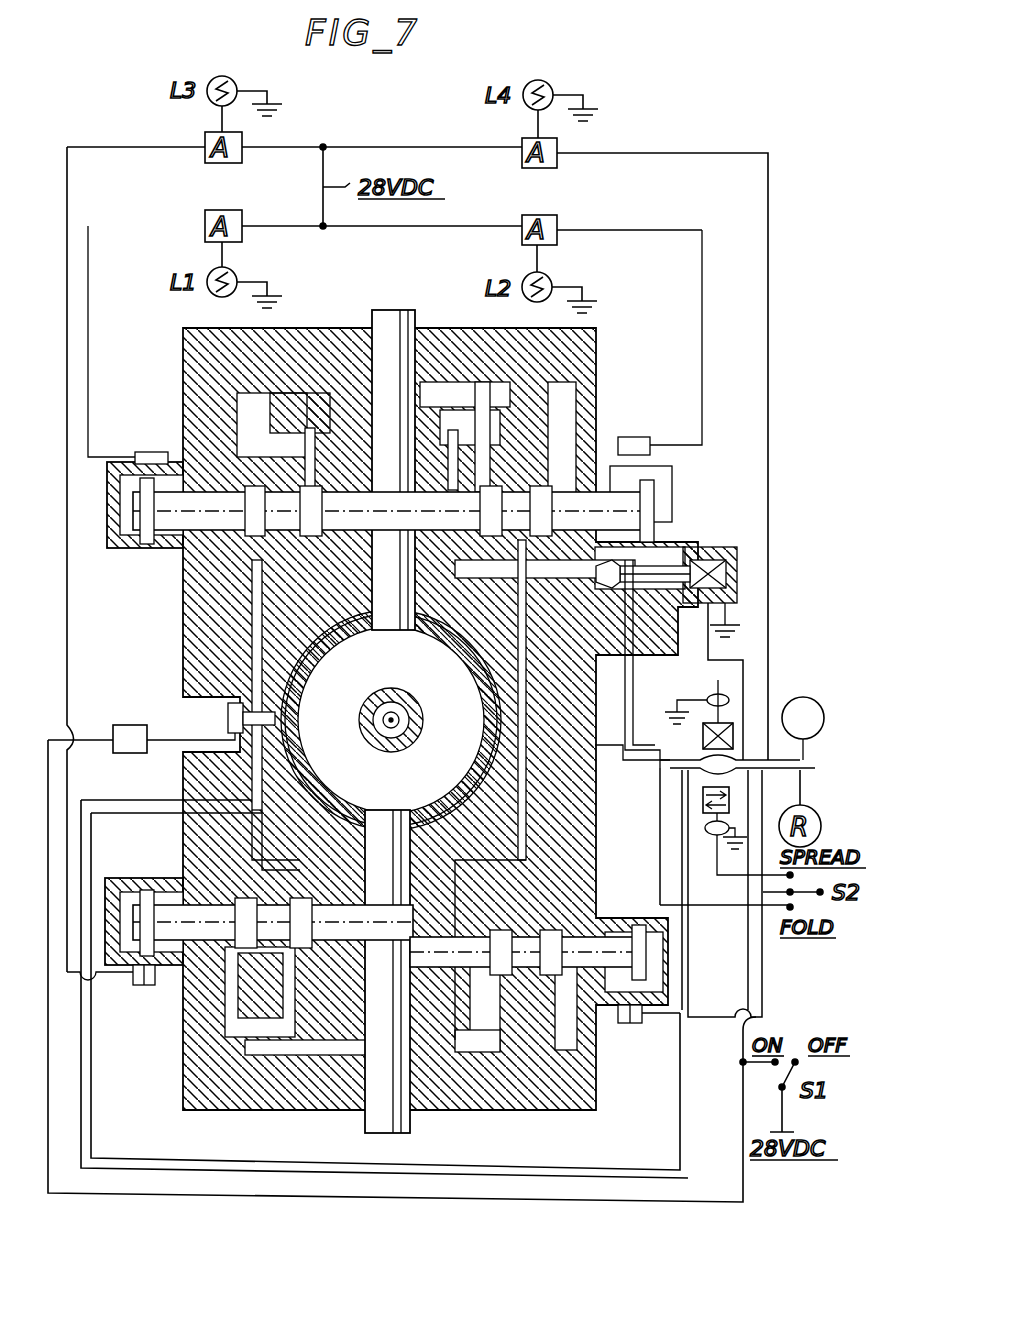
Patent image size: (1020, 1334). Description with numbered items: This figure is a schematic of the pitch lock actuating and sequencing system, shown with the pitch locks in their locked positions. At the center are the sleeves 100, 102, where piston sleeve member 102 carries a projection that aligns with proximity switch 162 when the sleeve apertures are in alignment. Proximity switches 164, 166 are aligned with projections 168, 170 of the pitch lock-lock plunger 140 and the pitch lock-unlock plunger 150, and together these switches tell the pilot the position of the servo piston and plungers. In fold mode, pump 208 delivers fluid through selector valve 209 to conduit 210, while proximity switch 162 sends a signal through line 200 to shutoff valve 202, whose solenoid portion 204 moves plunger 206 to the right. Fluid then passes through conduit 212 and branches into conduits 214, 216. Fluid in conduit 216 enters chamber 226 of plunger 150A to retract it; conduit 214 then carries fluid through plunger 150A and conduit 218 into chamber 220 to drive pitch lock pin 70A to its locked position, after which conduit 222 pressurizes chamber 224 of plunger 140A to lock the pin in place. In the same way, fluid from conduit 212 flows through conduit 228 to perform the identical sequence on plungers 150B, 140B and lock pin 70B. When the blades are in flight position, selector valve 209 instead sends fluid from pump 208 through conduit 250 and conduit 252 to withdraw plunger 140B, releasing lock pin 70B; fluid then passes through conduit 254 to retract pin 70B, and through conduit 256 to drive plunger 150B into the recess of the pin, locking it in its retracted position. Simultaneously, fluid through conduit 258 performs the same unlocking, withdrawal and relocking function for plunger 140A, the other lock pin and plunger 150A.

The pitch lock pin 70A is at (406, 312).
The pitch lock pin 70B is at (386, 812).
The sleeve 100 is at (545, 720).
The piston sleeve member 102 is at (340, 648).
The pitch lock-lock plunger 140 is at (205, 900).
The lock-in plunger 140A is at (265, 530).
The lock-in plunger 140B is at (250, 955).
The pitch lock-unlock plunger 150 is at (560, 945).
The lock-out plunger 150A is at (540, 490).
The lock-out plunger 150B is at (530, 940).
The proximity switch 162 is at (227, 712).
The proximity switch 164 is at (146, 988).
The proximity switch 166 is at (632, 1025).
The projection 168 is at (147, 900).
The projection 170 is at (640, 955).
The line 200 is at (100, 730).
The shutoff valve 202 is at (730, 545).
The solenoid portion 204 is at (715, 560).
The plunger 206 is at (660, 535).
The pump 208 is at (815, 712).
The selector valve 209 is at (735, 725).
The conduit 210 is at (628, 668).
The conduit 212 is at (472, 688).
The conduit 214 is at (460, 662).
The conduit 216 is at (435, 640).
The conduit 218 is at (510, 385).
The chamber 220 is at (432, 380).
The conduit 222 is at (315, 390).
The chamber 224 is at (230, 480).
The chamber 226 is at (350, 465).
The conduit 228 is at (525, 752).
The conduit 250 is at (800, 760).
The conduit 252 is at (688, 1085).
The conduit 254 is at (325, 960).
The conduit 256 is at (500, 1060).
The conduit 258 is at (255, 607).